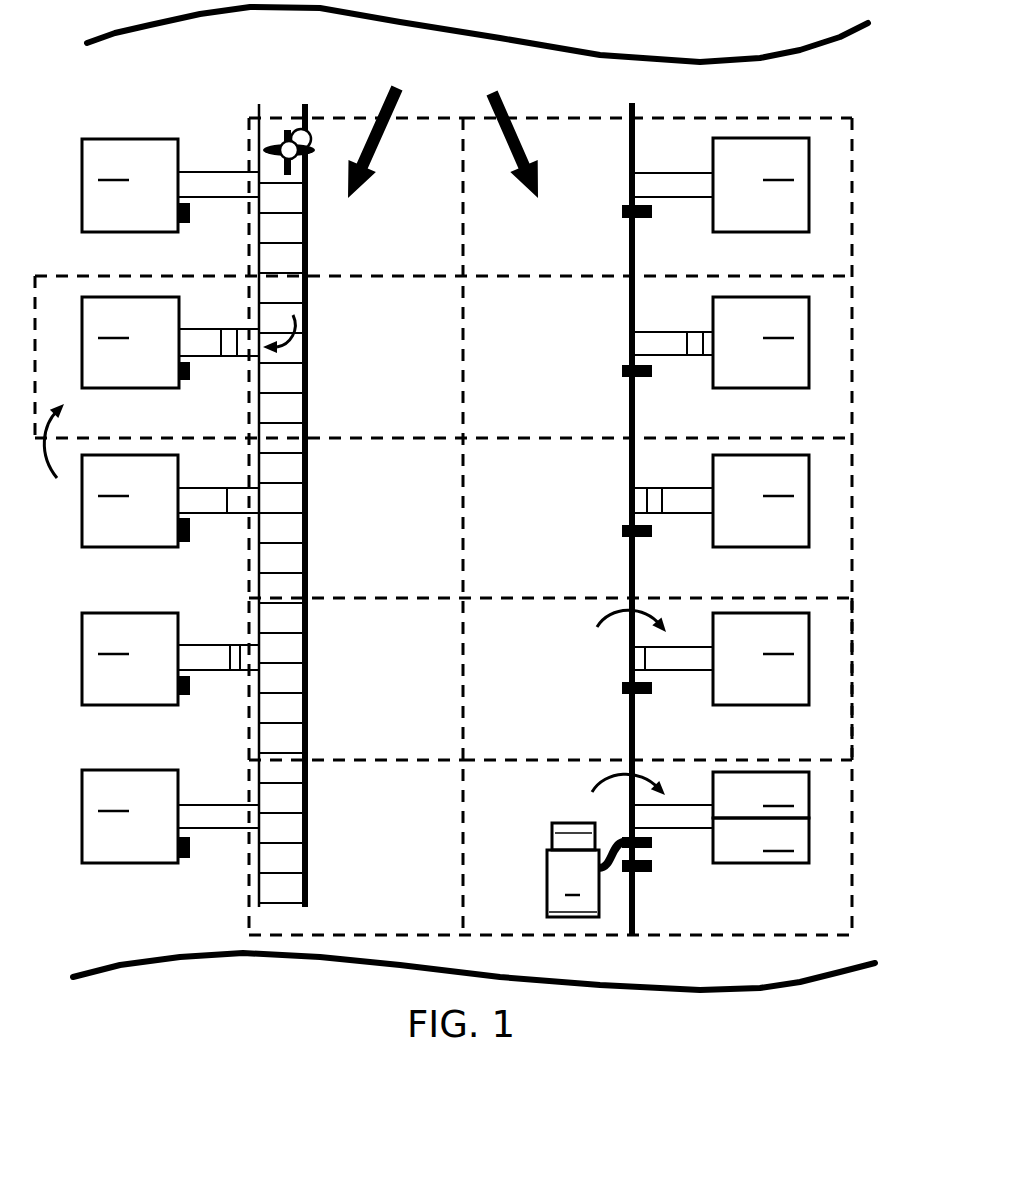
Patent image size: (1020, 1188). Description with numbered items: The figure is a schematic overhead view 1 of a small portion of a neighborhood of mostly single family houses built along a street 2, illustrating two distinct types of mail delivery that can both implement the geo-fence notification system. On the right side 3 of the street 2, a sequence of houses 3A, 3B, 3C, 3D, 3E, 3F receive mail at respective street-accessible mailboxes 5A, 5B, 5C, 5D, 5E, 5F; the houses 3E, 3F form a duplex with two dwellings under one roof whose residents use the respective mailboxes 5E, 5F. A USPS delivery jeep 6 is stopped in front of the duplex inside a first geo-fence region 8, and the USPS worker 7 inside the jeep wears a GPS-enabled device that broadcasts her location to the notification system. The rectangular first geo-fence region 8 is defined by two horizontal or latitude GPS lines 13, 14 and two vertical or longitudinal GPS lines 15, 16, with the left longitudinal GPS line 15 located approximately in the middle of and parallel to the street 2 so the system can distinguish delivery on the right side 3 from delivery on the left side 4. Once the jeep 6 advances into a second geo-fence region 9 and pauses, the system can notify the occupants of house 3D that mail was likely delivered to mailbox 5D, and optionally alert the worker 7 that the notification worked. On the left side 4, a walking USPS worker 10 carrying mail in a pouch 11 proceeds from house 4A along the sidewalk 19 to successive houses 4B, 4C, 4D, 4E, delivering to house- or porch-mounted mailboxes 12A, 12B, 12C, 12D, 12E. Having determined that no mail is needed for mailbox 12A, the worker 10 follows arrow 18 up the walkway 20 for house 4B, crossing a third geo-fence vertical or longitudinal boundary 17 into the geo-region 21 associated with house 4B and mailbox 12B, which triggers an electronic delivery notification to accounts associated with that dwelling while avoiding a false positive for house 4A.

The overhead view 1 is at (810, 92).
The street 2 is at (591, 163).
The right side 3 is at (557, 496).
The left side 4 is at (378, 128).
The house 3A is at (720, 185).
The house 3B is at (720, 342).
The house 3C is at (720, 501).
The house 3D is at (720, 659).
The house 3E is at (720, 800).
The house 3F is at (761, 840).
The house 4A is at (170, 185).
The house 4B is at (170, 342).
The house 4C is at (170, 501).
The house 4D is at (170, 659).
The house 4E is at (170, 816).
The street-accessible mailbox 5A is at (652, 213).
The street-accessible mailbox 5B is at (652, 372).
The street-accessible mailbox 5C is at (652, 532).
The street-accessible mailbox 5D is at (652, 689).
The street-accessible mailbox 5E is at (653, 843).
The street-accessible mailbox 5F is at (653, 866).
The USPS delivery jeep 6 is at (573, 870).
The USPS worker 7 is at (606, 870).
The first geo-fence region 8 is at (615, 792).
The second geo-fence region 9 is at (618, 628).
The USPS worker 10 is at (312, 152).
The pouch 11 is at (312, 128).
The house- or porch-mounted mailbox 12A is at (191, 212).
The house- or porch-mounted mailbox 12B is at (191, 370).
The house- or porch-mounted mailbox 12C is at (191, 530).
The house- or porch-mounted mailbox 12D is at (191, 686).
The house- or porch-mounted mailbox 12E is at (191, 847).
The latitude GPS line 13 is at (493, 760).
The latitude GPS line 14 is at (480, 935).
The left longitudinal GPS line 15 is at (462, 727).
The longitudinal GPS line 16 is at (850, 737).
The third geo-fence vertical or longitudinal boundary 17 is at (248, 128).
The arrow 18 is at (302, 326).
The sidewalk 19 is at (300, 411).
The walkway 20 is at (212, 342).
The geo-region 21 is at (55, 453).